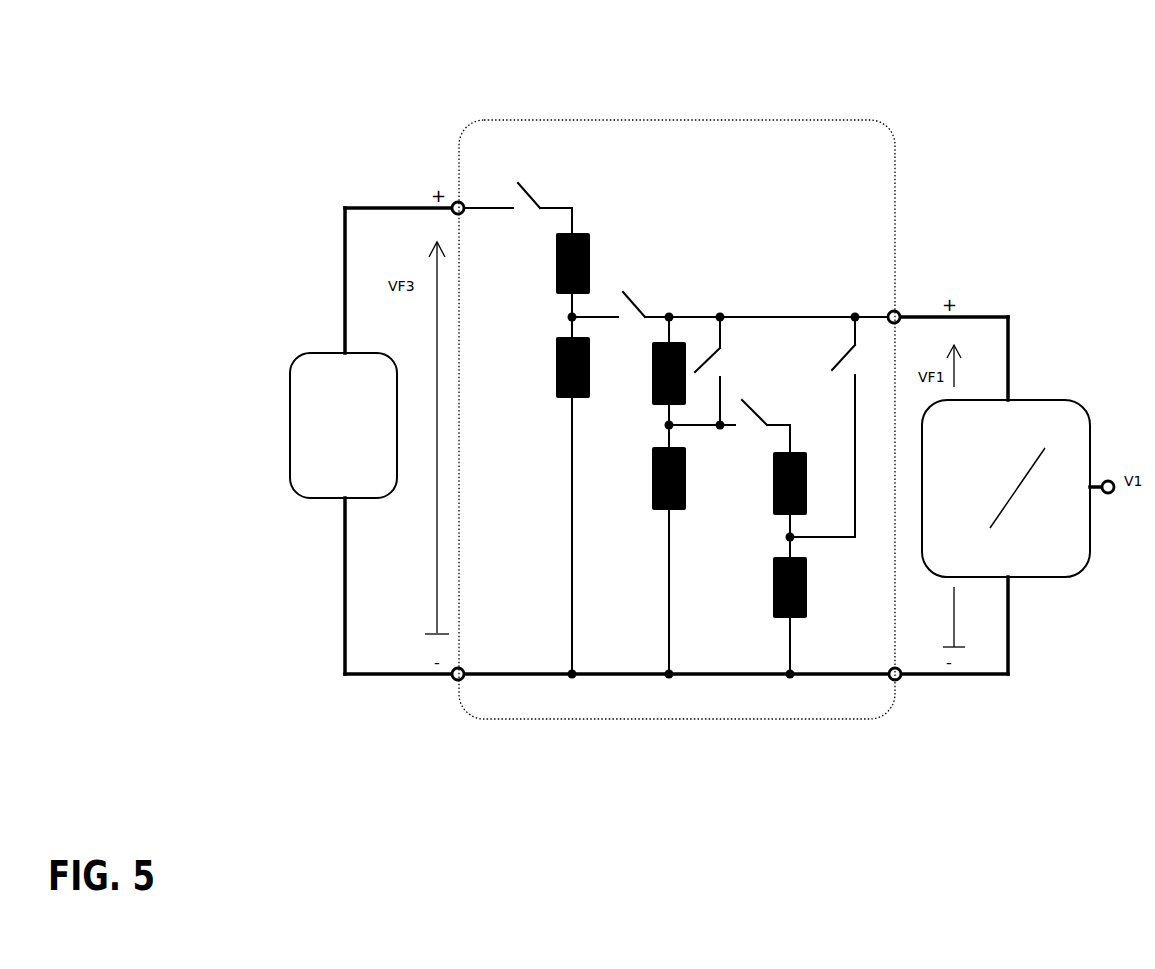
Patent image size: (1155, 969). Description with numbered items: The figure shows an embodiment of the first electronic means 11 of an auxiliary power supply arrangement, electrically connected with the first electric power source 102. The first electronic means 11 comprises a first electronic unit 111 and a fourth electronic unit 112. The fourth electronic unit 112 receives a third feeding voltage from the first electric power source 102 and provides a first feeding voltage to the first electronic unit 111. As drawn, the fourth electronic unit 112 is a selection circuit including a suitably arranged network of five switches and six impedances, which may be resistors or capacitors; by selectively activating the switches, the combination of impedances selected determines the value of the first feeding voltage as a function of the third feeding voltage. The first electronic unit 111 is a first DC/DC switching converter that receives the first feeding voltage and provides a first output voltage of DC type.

The first electronic means 11 is at (932, 108).
The first electric power source 102 is at (318, 477).
The first electronic unit 111 is at (1023, 557).
The fourth electronic unit 112 is at (830, 697).